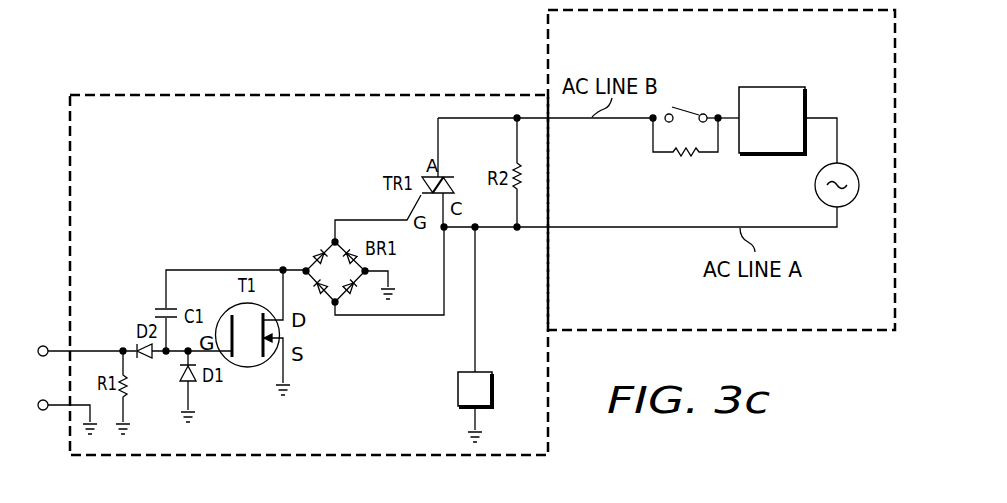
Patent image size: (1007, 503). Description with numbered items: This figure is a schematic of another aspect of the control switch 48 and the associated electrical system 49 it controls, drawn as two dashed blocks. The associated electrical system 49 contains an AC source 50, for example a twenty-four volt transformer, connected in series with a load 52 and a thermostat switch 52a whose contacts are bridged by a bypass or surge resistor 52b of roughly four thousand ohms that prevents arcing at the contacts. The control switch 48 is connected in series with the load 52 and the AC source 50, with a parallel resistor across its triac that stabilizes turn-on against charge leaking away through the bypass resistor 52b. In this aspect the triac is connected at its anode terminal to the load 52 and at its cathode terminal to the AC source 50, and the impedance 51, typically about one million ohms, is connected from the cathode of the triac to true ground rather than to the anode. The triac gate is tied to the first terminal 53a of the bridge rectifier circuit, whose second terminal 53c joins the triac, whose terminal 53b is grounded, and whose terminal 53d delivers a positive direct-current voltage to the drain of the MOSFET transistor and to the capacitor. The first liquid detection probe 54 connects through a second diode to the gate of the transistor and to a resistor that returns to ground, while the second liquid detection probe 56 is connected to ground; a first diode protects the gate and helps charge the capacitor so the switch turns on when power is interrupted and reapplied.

The control switch 48 is at (107, 129).
The associated electrical system 49 is at (884, 44).
The AC source 50 is at (850, 167).
The impedance 51 is at (493, 386).
The load 52 is at (806, 96).
The switch 52a is at (703, 99).
The bypass resistor 52b is at (689, 156).
The first terminal 53a is at (335, 242).
The terminal 53b is at (366, 271).
The second terminal 53c is at (335, 303).
The terminal 53d is at (306, 271).
The first liquid detection probe 54 is at (43, 345).
The second liquid detection probe 56 is at (43, 410).